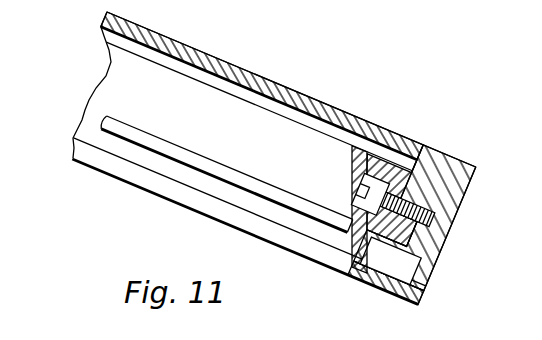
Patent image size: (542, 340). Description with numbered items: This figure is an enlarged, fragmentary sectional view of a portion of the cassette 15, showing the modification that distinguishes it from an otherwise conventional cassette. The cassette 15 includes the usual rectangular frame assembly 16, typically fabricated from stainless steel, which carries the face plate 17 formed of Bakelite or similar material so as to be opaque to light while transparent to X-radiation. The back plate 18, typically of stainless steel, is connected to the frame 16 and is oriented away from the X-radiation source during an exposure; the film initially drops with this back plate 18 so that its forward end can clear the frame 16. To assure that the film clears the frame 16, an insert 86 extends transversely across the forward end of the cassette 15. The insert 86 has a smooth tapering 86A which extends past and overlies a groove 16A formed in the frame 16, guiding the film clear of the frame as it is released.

The cassette 15 is at (296, 86).
The rectangular frame assembly 16 is at (473, 193).
The groove 16A is at (428, 272).
The face plate 17 is at (330, 132).
The back plate 18 is at (228, 182).
The insert 86 is at (400, 178).
The smooth tapering 86A is at (348, 215).